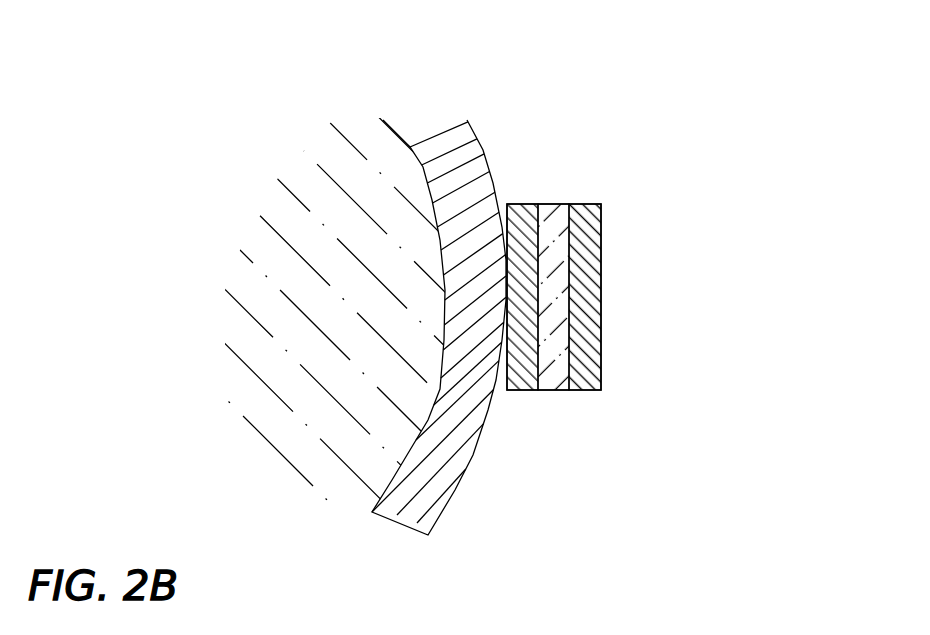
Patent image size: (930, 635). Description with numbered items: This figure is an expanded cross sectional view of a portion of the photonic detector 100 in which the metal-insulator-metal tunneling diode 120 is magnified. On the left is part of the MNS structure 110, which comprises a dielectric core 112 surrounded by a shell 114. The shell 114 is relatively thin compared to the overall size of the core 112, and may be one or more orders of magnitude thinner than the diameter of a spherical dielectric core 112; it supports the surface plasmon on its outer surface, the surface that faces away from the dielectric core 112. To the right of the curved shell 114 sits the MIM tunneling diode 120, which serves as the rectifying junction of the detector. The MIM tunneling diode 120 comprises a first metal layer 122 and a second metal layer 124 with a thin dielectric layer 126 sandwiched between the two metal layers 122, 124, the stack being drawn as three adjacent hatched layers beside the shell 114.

The photonic detector 100 is at (668, 74).
The MNS structure 110 is at (270, 88).
The dielectric core 112 is at (312, 188).
The shell 114 is at (443, 148).
The metal-insulator-metal (MIM) tunneling diode 120 is at (608, 152).
The first metal layer 122 is at (523, 390).
The second metal layer 124 is at (588, 390).
The dielectric layer 126 is at (556, 204).